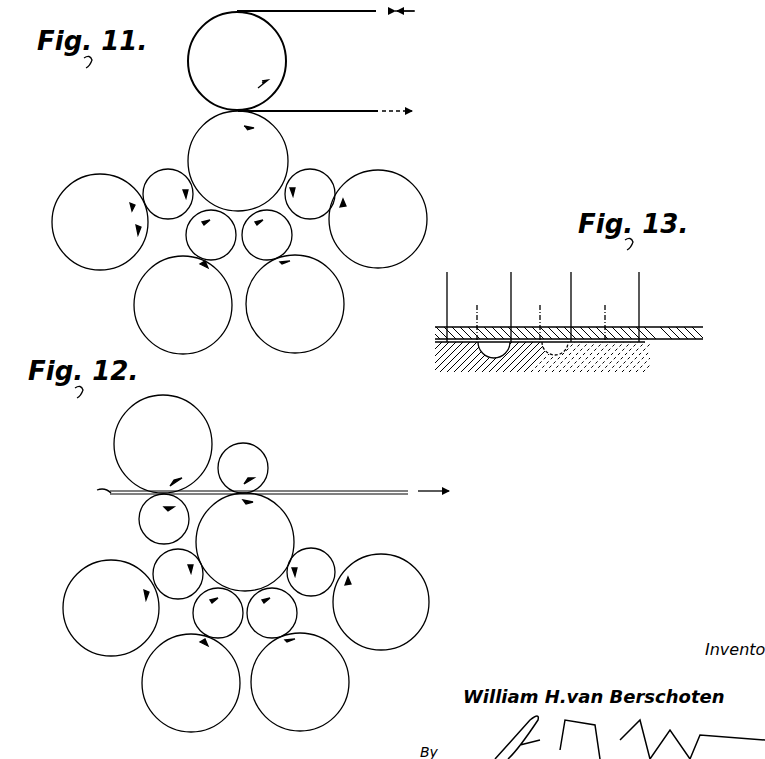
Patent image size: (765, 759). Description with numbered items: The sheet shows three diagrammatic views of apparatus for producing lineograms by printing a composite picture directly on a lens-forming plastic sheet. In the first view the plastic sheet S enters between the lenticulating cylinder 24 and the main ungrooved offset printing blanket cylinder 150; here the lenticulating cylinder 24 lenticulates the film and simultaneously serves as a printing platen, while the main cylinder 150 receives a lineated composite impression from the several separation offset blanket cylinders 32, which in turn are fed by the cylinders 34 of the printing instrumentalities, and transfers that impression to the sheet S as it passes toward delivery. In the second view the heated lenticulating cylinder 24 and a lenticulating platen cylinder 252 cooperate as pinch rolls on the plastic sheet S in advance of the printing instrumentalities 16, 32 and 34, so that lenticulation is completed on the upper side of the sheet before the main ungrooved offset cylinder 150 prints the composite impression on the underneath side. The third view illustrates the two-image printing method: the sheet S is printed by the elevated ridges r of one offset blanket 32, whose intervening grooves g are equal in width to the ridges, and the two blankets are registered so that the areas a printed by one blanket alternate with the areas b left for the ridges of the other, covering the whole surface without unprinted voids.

In FIG. 11, the lenticulating cylinder 24 is at (286, 62).
In FIG. 12, the lenticulating cylinder 24 is at (202, 418).
In FIG. 11, the main ungrooved offset printing blanket cylinder 150 is at (285, 146).
In FIG. 12, the main ungrooved offset printing blanket cylinder 150 is at (296, 537).
In FIG. 11, the separation offset blanket cylinder 32 is at (165, 220).
In FIG. 13, the separation offset blanket cylinder 32 is at (652, 366).
In FIG. 12, the separation offset blanket cylinder 32 is at (265, 463).
In FIG. 11, the printing instrumentality 34 is at (108, 270).
In FIG. 12, the printing instrumentality 34 is at (84, 656).
In FIG. 12, the lenticulating platen cylinder 252 is at (140, 521).
In FIG. 12, the printing instrumentality 16 is at (289, 511).
In FIG. 11, the picture sheet S is at (333, 0).
In FIG. 13, the picture sheet S is at (699, 324).
In FIG. 12, the picture sheet S is at (378, 488).
In FIG. 13, the elevated ridge r is at (447, 343).
In FIG. 13, the raised portion a is at (523, 316).
In FIG. 13, the recessed portion b is at (555, 316).
In FIG. 13, the groove g is at (493, 352).